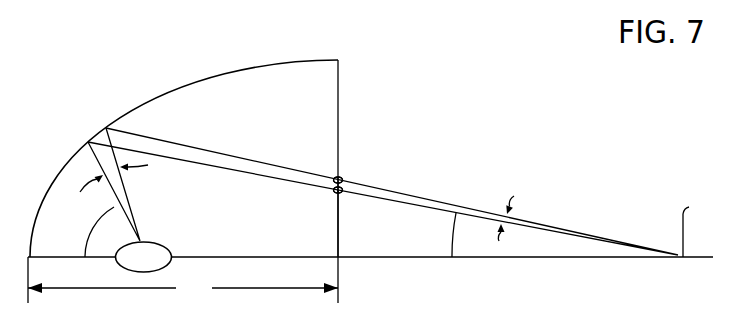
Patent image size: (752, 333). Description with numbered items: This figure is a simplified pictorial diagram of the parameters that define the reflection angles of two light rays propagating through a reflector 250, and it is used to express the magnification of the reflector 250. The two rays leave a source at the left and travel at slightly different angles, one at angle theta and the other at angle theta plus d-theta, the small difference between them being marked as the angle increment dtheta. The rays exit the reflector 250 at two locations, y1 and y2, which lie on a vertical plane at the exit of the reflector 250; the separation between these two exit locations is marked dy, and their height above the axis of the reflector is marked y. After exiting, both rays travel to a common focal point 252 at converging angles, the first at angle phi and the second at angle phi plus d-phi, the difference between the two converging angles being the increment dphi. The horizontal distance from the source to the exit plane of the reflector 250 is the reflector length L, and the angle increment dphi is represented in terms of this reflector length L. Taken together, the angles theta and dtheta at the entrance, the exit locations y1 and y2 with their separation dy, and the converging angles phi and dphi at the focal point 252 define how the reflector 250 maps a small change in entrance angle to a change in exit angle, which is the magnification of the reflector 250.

The reflector 250 is at (155, 97).
The focal point 252 is at (697, 219).
The reflector length L is at (183, 287).
The exit location y1 is at (332, 197).
The exit location y2 is at (335, 173).
The separation dy is at (359, 168).
The height y is at (352, 223).
The angle theta is at (99, 232).
The angle increment d-theta dtheta is at (124, 181).
The converging angle phi is at (433, 235).
The angle increment d-phi dphi is at (530, 202).